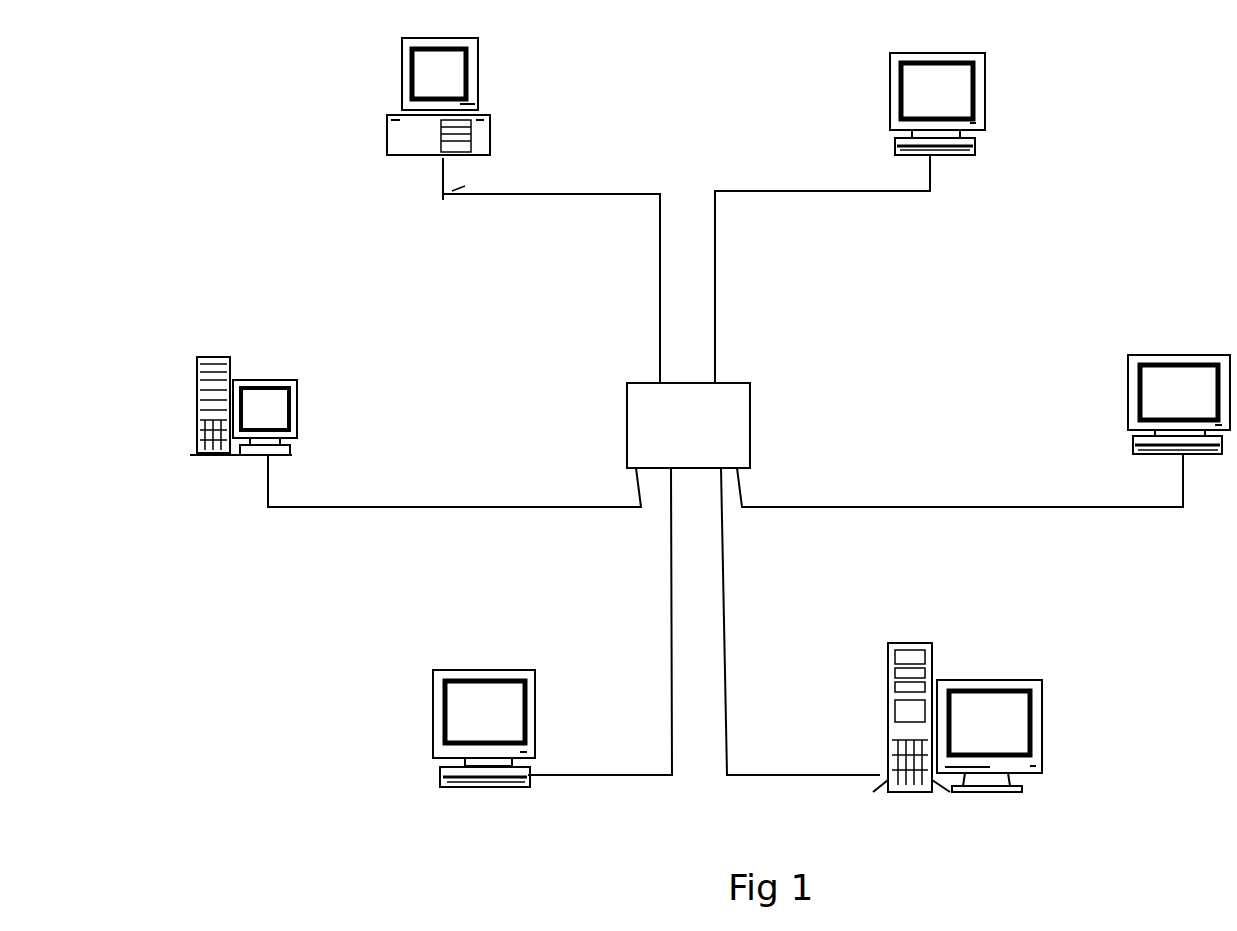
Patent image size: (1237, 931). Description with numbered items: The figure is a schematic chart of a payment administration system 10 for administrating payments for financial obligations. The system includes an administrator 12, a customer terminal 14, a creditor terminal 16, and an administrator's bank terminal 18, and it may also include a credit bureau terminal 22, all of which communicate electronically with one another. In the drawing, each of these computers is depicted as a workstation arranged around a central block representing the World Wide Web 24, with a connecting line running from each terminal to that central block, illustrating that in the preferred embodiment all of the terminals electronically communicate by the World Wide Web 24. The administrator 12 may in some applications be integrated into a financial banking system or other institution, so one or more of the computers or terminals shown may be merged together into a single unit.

The payment administration system 10 is at (212, 638).
The administrator 12 is at (1048, 722).
The customer terminal 14 is at (405, 150).
The creditor terminal 16 is at (963, 160).
The administrator's bank terminal 18 is at (1185, 353).
The credit bureau terminal 22 is at (300, 420).
The World Wide Web 24 is at (712, 446).